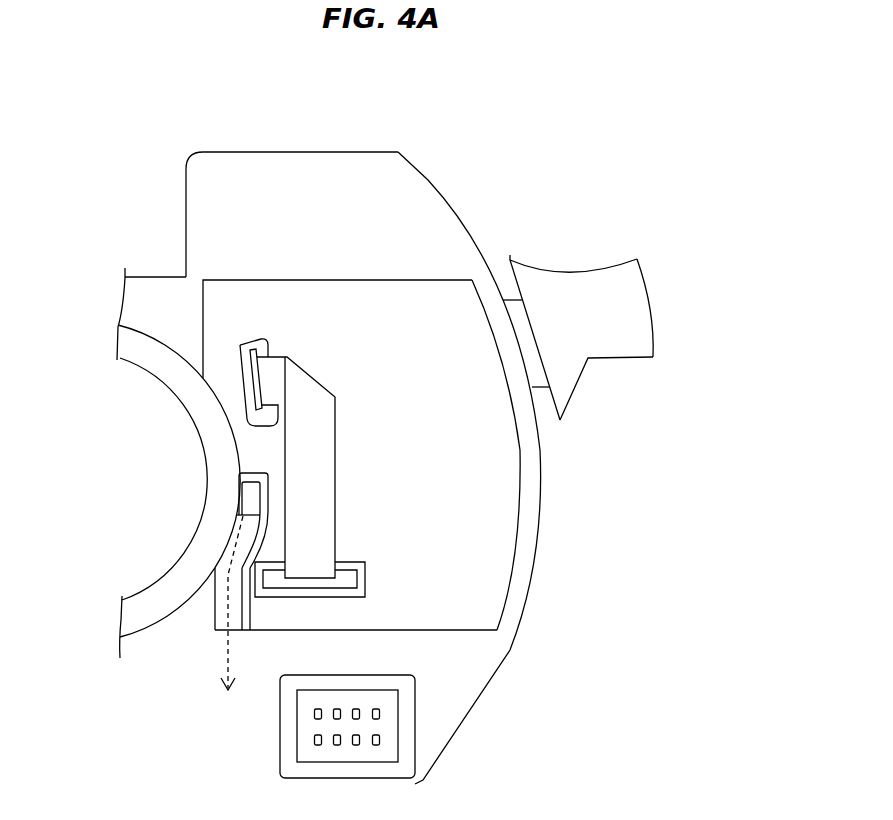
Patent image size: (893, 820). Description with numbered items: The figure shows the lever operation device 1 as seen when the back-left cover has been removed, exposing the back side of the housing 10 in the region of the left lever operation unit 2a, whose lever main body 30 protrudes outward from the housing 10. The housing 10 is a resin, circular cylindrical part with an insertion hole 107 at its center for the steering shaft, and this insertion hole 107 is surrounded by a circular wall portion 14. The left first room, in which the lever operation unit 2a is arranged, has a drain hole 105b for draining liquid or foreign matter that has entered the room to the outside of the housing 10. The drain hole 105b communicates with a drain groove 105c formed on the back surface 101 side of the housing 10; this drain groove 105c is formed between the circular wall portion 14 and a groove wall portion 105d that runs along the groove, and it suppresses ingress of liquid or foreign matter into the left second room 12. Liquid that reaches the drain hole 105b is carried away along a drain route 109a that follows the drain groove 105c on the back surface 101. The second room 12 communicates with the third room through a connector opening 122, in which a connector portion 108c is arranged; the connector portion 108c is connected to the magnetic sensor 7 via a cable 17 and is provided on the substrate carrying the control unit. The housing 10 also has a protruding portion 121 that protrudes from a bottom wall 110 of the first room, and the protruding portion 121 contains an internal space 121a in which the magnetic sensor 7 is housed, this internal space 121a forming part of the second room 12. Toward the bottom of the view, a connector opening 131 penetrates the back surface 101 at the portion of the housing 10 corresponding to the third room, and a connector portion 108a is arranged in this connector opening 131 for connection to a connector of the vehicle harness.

The lever operation device 1 is at (686, 98).
The lever operation unit 2a is at (641, 252).
The magnetic sensor 7 is at (247, 340).
The housing 10 is at (373, 152).
The left second room 12 is at (523, 463).
The circular wall portion 14 is at (215, 488).
The cable 17 is at (300, 447).
The lever main body 30 is at (601, 358).
The back surface 101 is at (330, 167).
The drain hole 105b is at (247, 500).
The drain groove 105c is at (233, 555).
The groove wall portion 105d is at (245, 613).
The insertion hole 107 is at (200, 445).
The connector portion 108a is at (417, 713).
The connector portion 108c is at (348, 582).
The drain route 109a is at (225, 660).
The bottom wall 110 is at (503, 498).
The protruding portion 121 is at (240, 378).
The internal space 121a is at (250, 418).
The connector opening 122 is at (365, 573).
The connector opening 131 is at (392, 743).